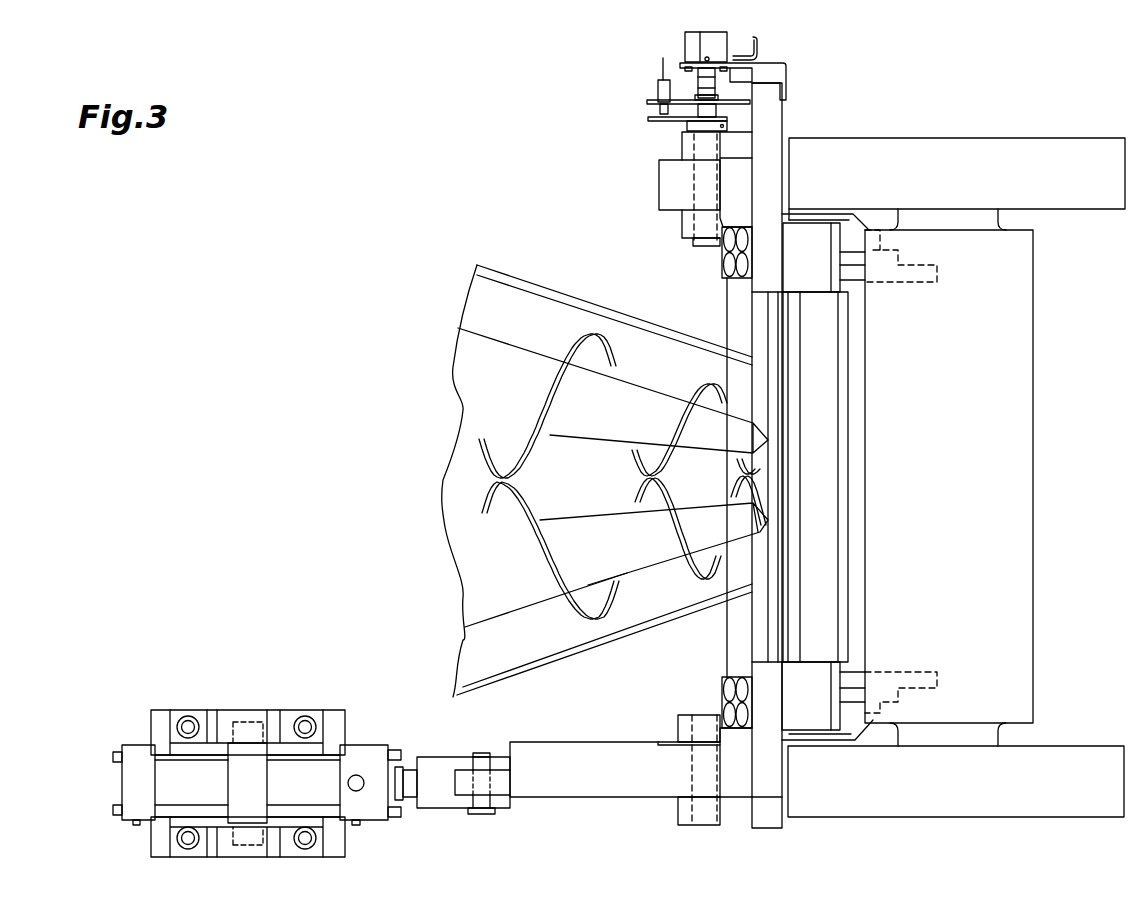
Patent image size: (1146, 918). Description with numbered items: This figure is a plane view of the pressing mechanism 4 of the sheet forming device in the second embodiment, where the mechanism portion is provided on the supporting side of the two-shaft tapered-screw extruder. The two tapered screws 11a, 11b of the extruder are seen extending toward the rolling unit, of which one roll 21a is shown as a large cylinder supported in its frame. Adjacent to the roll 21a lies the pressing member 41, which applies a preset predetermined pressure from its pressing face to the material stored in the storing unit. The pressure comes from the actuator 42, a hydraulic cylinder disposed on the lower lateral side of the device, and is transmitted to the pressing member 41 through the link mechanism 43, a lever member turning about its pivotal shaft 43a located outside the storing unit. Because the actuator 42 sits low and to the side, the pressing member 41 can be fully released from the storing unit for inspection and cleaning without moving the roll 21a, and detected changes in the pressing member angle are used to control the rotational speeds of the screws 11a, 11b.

The pressing mechanism 4 is at (470, 742).
The screw 11a is at (630, 577).
The screw 11b is at (537, 362).
The roll 21a is at (1005, 495).
The pressing member 41 is at (817, 508).
The actuator 42 is at (285, 780).
The link mechanism 43 is at (570, 768).
The pivotal shaft 43a is at (692, 175).